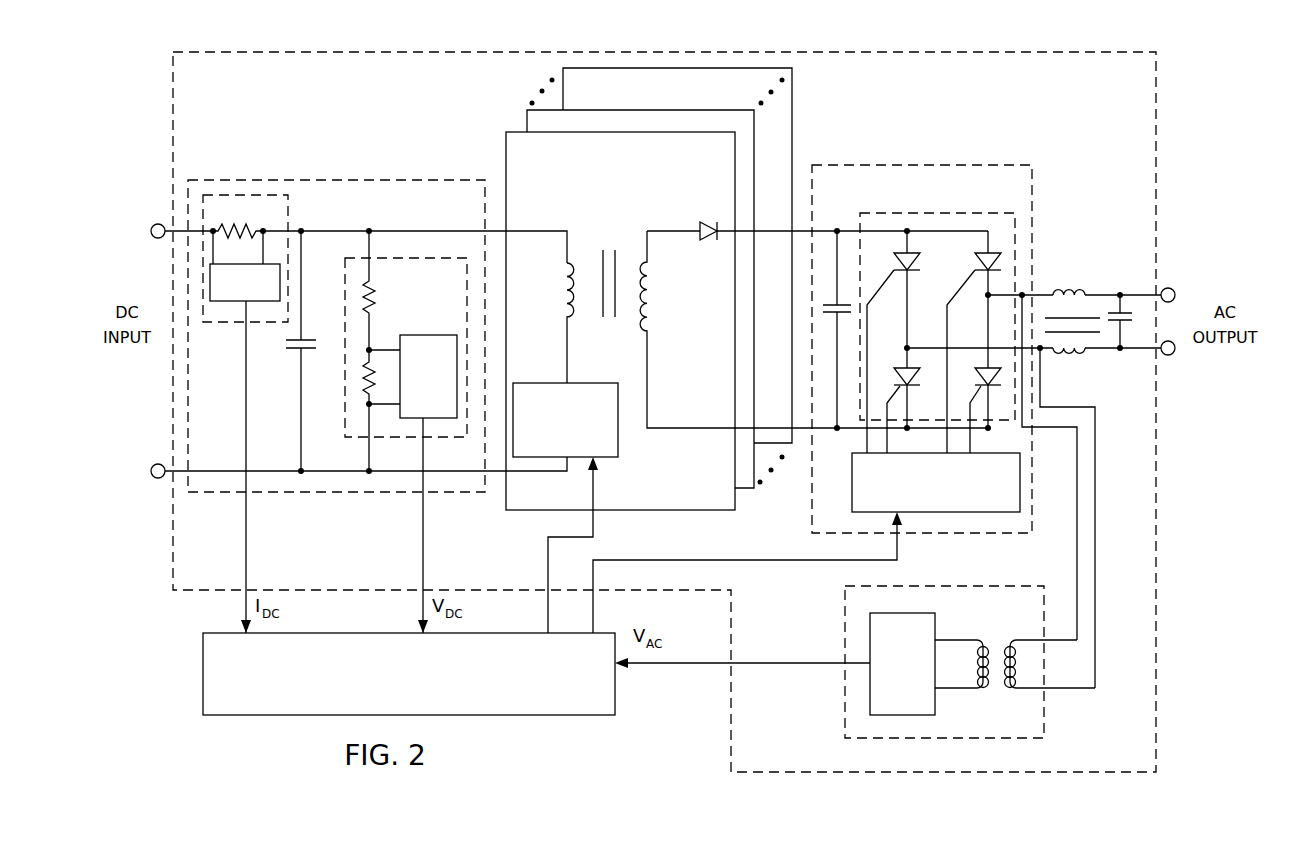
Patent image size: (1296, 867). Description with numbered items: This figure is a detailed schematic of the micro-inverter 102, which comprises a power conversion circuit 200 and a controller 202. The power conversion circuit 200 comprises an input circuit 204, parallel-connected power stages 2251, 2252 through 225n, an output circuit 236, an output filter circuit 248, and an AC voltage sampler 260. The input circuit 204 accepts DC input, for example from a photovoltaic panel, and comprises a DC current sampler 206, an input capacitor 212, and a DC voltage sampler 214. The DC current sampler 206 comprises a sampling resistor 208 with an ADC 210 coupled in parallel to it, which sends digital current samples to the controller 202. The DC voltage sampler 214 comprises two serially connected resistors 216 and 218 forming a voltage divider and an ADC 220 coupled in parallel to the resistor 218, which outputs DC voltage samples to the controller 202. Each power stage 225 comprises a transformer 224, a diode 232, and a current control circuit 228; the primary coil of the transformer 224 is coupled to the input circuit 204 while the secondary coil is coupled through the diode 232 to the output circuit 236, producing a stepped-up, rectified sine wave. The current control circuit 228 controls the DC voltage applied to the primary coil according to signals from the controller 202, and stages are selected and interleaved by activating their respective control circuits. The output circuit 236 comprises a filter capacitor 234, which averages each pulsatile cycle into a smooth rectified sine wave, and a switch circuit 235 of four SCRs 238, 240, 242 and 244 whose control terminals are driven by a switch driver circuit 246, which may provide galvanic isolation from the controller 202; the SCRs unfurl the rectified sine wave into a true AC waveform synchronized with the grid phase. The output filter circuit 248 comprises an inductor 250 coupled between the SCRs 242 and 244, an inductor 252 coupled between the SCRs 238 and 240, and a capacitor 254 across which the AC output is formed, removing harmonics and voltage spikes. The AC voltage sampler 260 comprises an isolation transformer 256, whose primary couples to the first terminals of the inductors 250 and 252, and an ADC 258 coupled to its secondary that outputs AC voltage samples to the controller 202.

The power conversion circuit 200 is at (1157, 80).
The micro-inverter 102 is at (313, 114).
The controller 202 is at (615, 690).
The input circuit 204 is at (432, 180).
The DC current sampler 206 is at (288, 202).
The sampling resistor 208 is at (246, 225).
The A/D converter 210 is at (210, 278).
The input capacitor 212 is at (295, 352).
The DC voltage sampler 214 is at (418, 258).
The resistor 216 is at (378, 283).
The resistor 218 is at (364, 381).
The ADC 220 is at (415, 399).
The transformer 224 is at (606, 230).
The power stage 225 is at (730, 287).
The power stage 2251 is at (668, 168).
The power stage 2252 is at (754, 118).
The power stage 225n is at (792, 72).
The current control circuit 228 is at (528, 383).
The diode 232 is at (700, 240).
The filter capacitor 234 is at (850, 300).
The switch circuit 235 is at (1032, 220).
The output circuit 236 is at (1010, 165).
The silicon-controlled rectifier 238 is at (898, 258).
The silicon-controlled rectifier 240 is at (897, 370).
The silicon-controlled rectifier 242 is at (996, 258).
The silicon-controlled rectifier 244 is at (979, 370).
The switch driver circuit 246 is at (1020, 478).
The output filter circuit 248 is at (1068, 269).
The inductor 250 is at (1066, 290).
The inductor 252 is at (1062, 352).
The capacitor 254 is at (1130, 298).
The isolation transformer 256 is at (995, 700).
The ADC 258 is at (870, 690).
The AC voltage sampler 260 is at (845, 612).